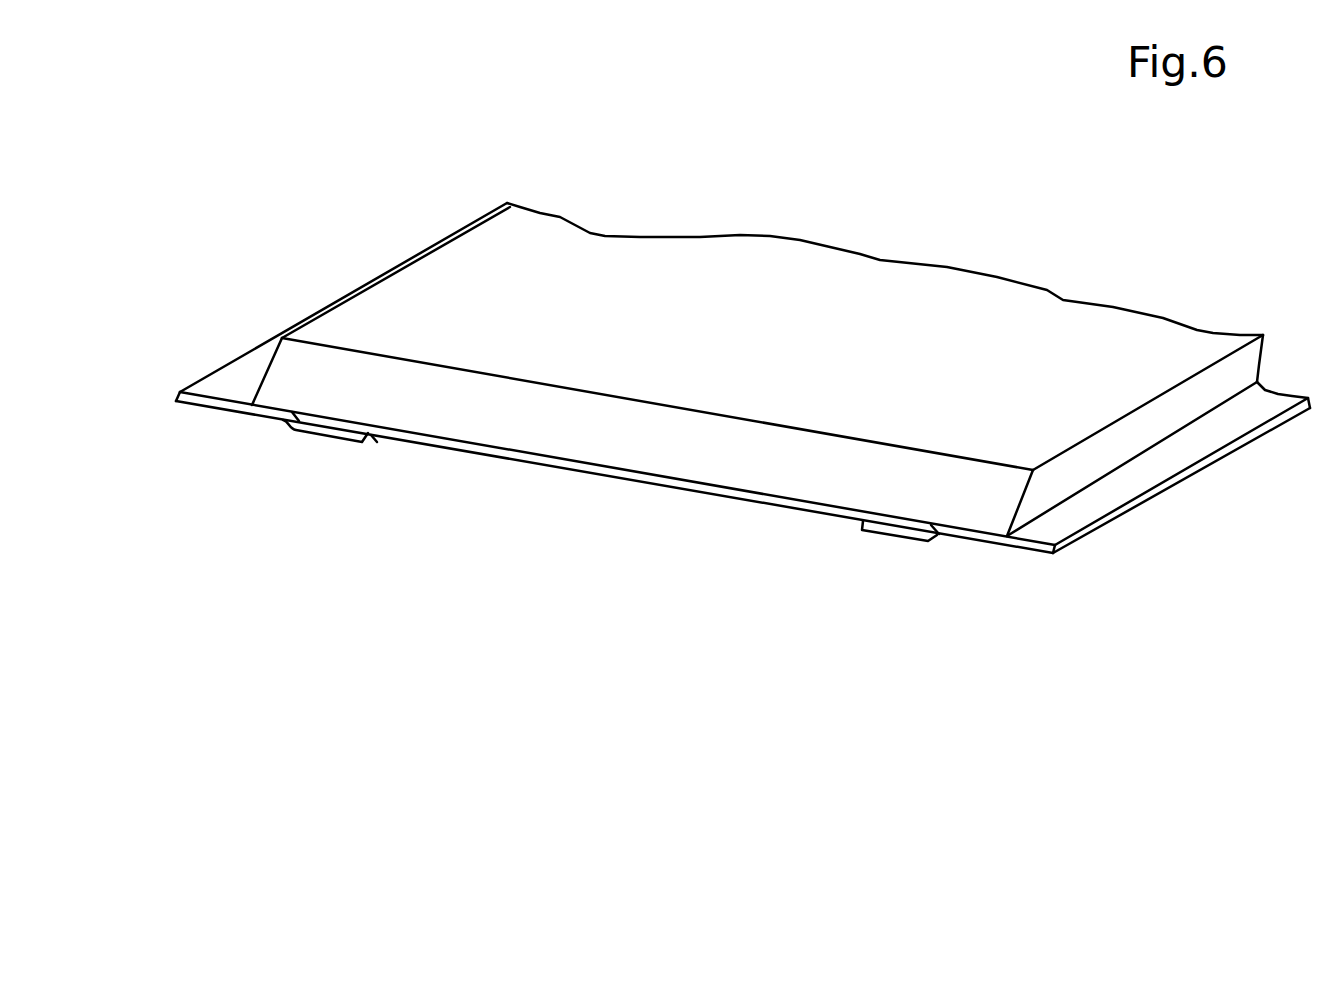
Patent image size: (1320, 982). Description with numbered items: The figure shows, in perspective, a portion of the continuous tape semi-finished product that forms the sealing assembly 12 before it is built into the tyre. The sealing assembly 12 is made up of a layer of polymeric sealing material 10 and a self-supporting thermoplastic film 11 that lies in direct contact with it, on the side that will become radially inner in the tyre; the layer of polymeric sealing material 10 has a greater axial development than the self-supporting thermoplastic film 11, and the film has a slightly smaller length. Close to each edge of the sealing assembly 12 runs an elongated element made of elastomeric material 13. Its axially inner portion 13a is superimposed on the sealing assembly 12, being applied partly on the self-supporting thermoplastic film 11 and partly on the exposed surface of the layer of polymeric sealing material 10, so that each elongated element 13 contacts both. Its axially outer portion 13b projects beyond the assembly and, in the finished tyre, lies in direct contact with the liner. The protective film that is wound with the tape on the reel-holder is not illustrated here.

The layer of polymeric sealing material 10 is at (745, 346).
The self-supporting thermoplastic film 11 is at (642, 468).
The sealing assembly 12 is at (705, 558).
The elongated element made of elastomeric material 13 is at (743, 558).
The axially inner portion 13a is at (604, 549).
The axially outer portion 13b is at (577, 542).